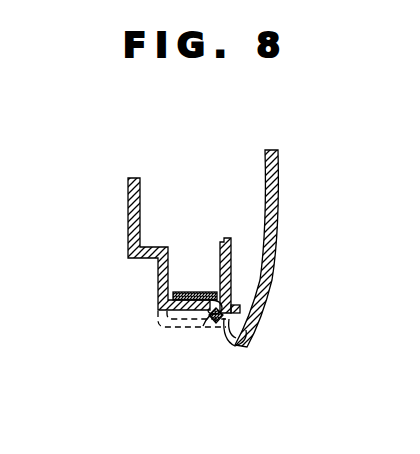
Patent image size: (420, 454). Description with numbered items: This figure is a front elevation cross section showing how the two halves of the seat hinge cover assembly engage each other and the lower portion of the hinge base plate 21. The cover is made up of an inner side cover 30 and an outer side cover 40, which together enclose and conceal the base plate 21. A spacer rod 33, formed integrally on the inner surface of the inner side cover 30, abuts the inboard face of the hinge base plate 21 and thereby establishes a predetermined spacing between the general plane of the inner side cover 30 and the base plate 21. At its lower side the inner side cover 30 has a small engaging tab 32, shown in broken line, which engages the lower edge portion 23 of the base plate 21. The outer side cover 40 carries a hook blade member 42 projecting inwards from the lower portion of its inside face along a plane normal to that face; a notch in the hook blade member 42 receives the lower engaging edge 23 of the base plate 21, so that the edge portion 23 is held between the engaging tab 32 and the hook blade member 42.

The inner side cover 30 is at (118, 222).
The spacer rod 33 is at (197, 292).
The hinge base plate 21 is at (219, 221).
The outer side cover 40 is at (348, 237).
The hook blade member 42 is at (157, 361).
The edge portion 23 is at (170, 392).
The engaging tab 32 is at (222, 373).